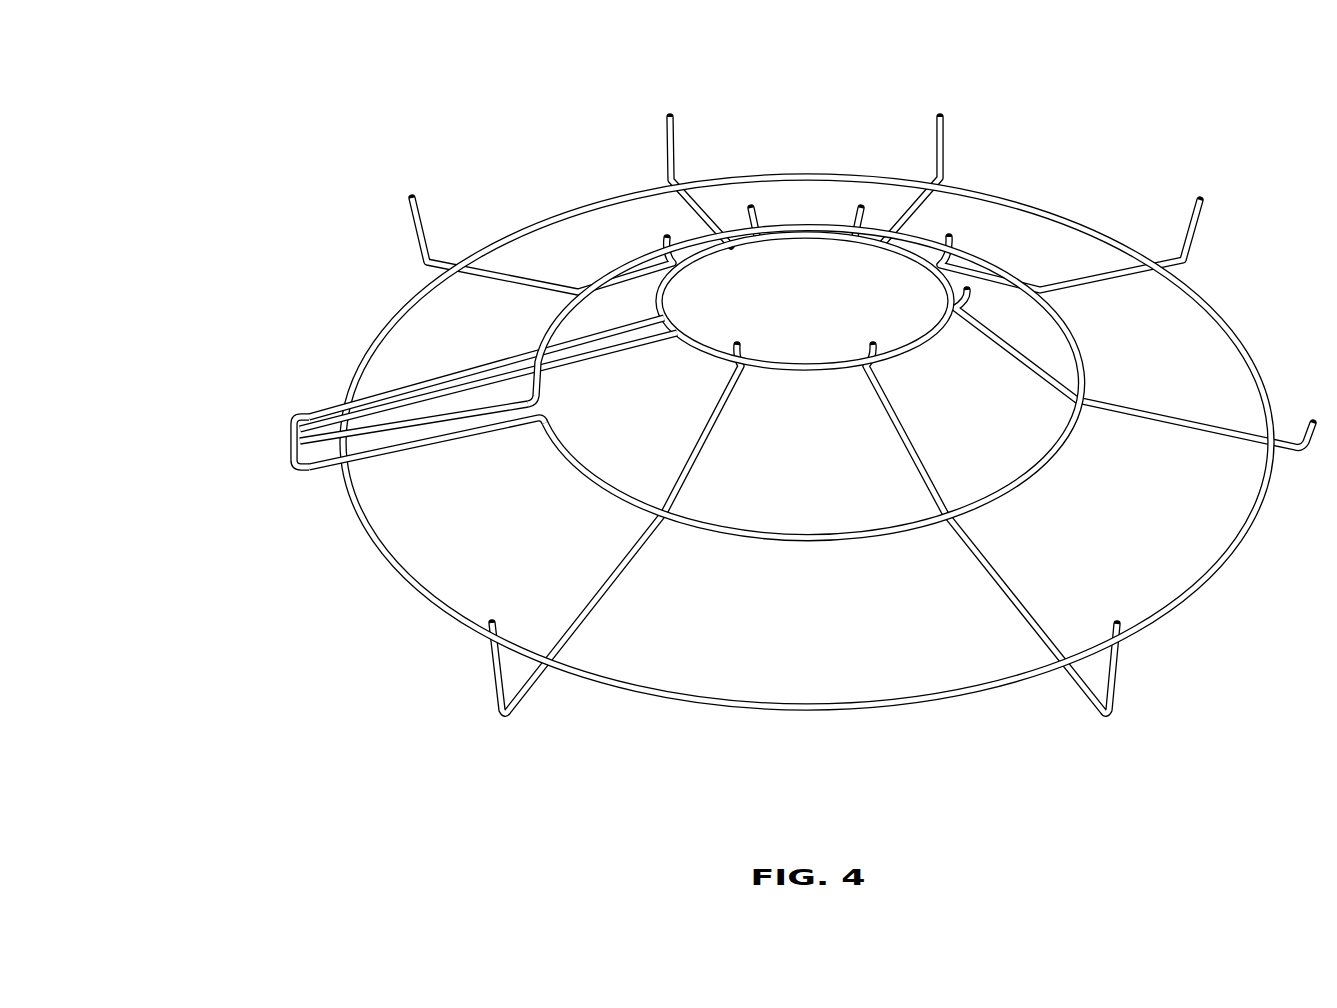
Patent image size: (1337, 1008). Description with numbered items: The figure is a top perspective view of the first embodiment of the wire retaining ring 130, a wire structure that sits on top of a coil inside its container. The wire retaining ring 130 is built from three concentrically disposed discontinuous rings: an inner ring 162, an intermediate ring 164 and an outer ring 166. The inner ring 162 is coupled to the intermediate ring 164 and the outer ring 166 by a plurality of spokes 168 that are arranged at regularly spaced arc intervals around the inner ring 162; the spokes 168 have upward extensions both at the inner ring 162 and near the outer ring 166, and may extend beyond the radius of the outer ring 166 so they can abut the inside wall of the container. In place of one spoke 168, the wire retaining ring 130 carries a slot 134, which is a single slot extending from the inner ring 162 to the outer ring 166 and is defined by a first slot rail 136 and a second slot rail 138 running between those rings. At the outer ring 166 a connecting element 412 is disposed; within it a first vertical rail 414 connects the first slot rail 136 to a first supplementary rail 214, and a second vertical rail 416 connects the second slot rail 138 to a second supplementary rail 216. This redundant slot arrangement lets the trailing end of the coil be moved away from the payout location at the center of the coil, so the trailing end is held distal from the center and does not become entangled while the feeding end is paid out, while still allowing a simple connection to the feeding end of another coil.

The wire retaining ring 130 is at (766, 377).
The slot 134 is at (403, 494).
The first slot rail 136 is at (448, 405).
The second slot rail 138 is at (451, 411).
The inner ring 162 is at (908, 250).
The intermediate ring 164 is at (982, 258).
The outer ring 166 is at (1085, 225).
The spokes 168 is at (1125, 268).
The first supplementary rail 214 is at (326, 419).
The second supplementary rail 216 is at (329, 474).
The connecting element 412 is at (282, 417).
The first vertical rail 414 is at (316, 440).
The second vertical rail 416 is at (306, 468).